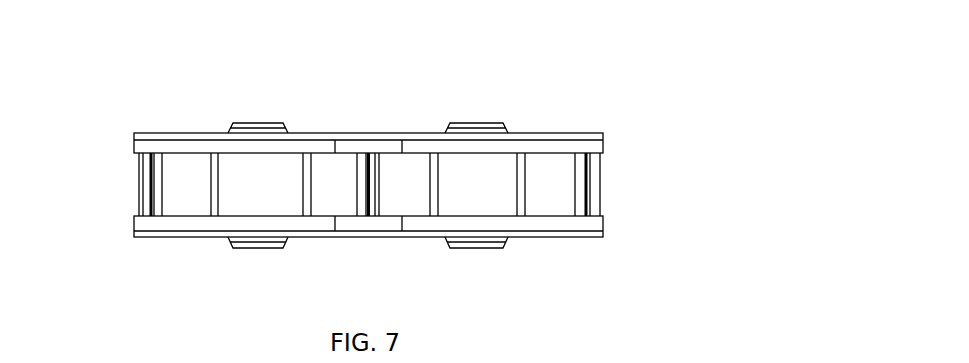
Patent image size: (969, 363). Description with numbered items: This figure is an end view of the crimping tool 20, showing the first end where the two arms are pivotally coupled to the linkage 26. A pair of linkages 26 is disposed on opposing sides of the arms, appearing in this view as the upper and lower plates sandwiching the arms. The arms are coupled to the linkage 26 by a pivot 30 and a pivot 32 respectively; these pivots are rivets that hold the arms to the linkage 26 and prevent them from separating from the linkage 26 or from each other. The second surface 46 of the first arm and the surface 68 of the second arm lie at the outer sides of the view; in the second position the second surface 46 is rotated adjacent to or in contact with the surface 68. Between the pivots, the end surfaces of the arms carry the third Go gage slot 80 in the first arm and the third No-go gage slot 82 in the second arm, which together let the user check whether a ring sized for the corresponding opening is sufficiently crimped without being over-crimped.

The crimping tool 20 is at (597, 111).
The linkage 26 is at (153, 132).
The pivot 30 is at (257, 124).
The pivot 32 is at (485, 123).
The second surface 46 is at (140, 192).
The surface 68 is at (603, 183).
The third Go gage slot 80 is at (278, 202).
The third No-go gage slot 82 is at (493, 210).